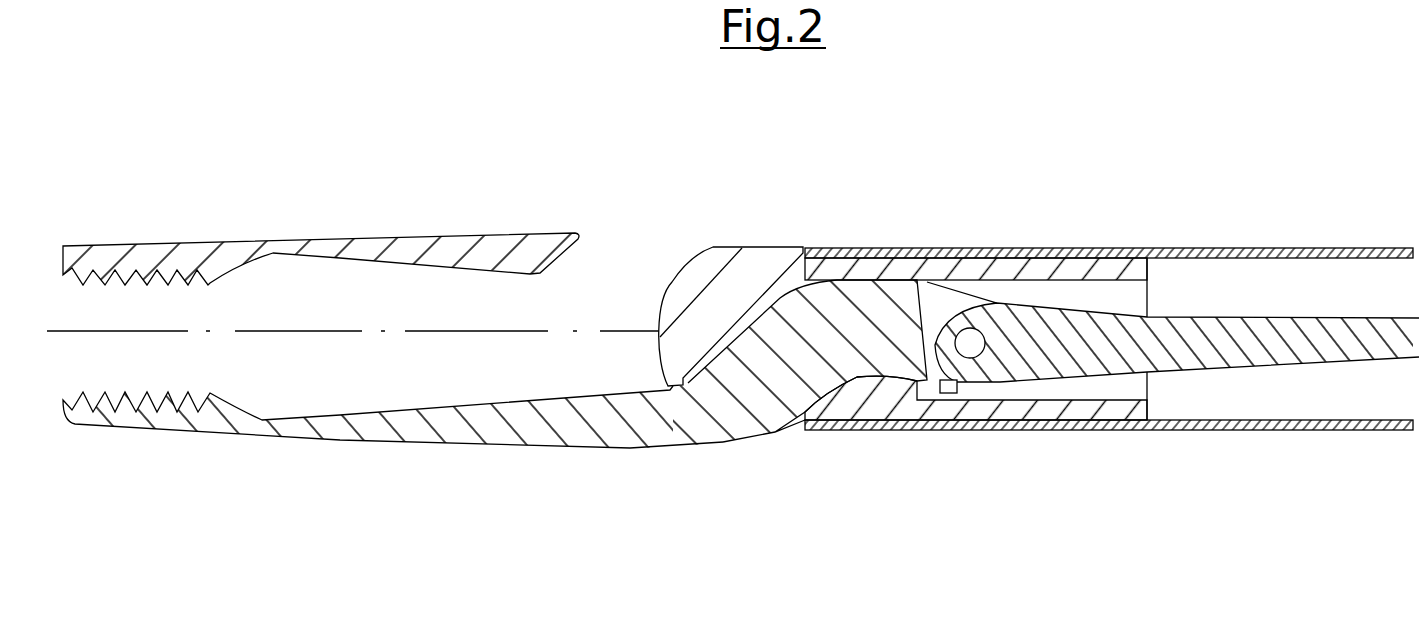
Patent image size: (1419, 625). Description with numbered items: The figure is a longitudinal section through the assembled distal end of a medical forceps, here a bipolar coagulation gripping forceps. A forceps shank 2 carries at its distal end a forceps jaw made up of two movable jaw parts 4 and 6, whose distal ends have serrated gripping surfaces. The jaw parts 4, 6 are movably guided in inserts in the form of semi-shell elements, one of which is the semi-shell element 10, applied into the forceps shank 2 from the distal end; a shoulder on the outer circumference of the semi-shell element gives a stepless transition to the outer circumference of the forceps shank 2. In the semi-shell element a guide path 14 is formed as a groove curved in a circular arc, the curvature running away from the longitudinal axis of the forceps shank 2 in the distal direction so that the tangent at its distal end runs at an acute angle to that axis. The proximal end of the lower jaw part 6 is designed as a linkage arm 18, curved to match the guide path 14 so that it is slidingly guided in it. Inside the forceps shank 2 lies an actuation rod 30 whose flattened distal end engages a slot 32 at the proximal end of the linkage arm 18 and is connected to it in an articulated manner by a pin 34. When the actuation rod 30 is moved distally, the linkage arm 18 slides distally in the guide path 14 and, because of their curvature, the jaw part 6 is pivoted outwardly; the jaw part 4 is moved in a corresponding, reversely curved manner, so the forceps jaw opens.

The forceps shank 2 is at (1212, 247).
The jaw part 4 is at (387, 236).
The jaw part 6 is at (378, 428).
The semi-shell element 10 is at (753, 272).
The guide path 14 is at (900, 282).
The linkage arm 18 is at (857, 370).
The actuation rod 30 is at (1283, 353).
The slot 32 is at (940, 392).
The pin 34 is at (977, 355).